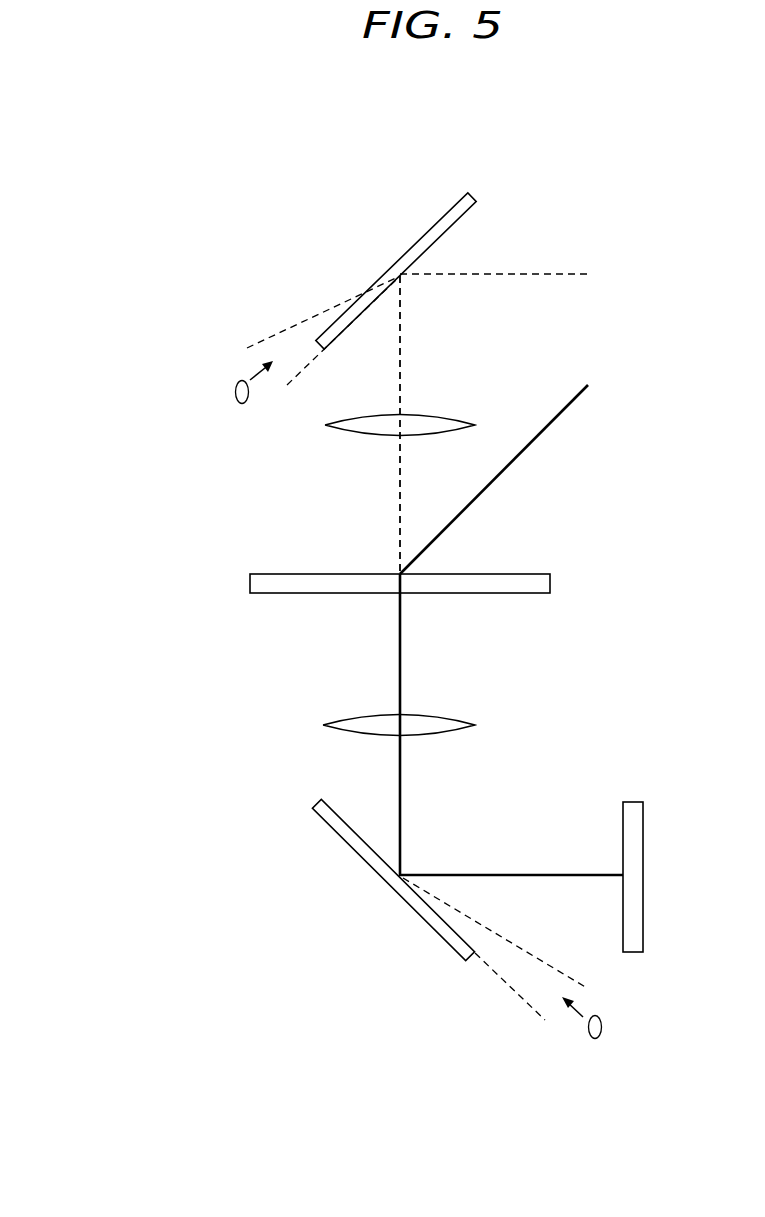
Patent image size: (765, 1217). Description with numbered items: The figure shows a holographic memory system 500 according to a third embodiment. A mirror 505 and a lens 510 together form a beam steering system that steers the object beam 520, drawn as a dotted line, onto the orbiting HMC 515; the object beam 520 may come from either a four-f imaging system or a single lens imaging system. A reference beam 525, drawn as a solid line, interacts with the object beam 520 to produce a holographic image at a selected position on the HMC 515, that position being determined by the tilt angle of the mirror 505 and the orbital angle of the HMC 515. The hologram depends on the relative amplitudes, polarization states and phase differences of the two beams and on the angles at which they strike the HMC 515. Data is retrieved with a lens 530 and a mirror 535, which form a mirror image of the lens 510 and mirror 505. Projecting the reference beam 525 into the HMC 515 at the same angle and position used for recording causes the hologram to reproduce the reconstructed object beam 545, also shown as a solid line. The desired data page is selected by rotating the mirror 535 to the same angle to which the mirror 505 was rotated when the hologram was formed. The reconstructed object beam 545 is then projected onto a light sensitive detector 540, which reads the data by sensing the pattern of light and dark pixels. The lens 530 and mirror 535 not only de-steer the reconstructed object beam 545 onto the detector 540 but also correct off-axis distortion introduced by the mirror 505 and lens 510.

The holographic memory system 500 is at (105, 108).
The mirror 505 is at (477, 198).
The lens 510 is at (324, 423).
The orbiting HMC 515 is at (550, 585).
The object beam 520 is at (535, 274).
The reference beam 525 is at (568, 408).
The lens 530 is at (470, 725).
The mirror 535 is at (316, 806).
The light sensitive detector 540 is at (632, 802).
The reconstructed object beam 545 is at (398, 657).